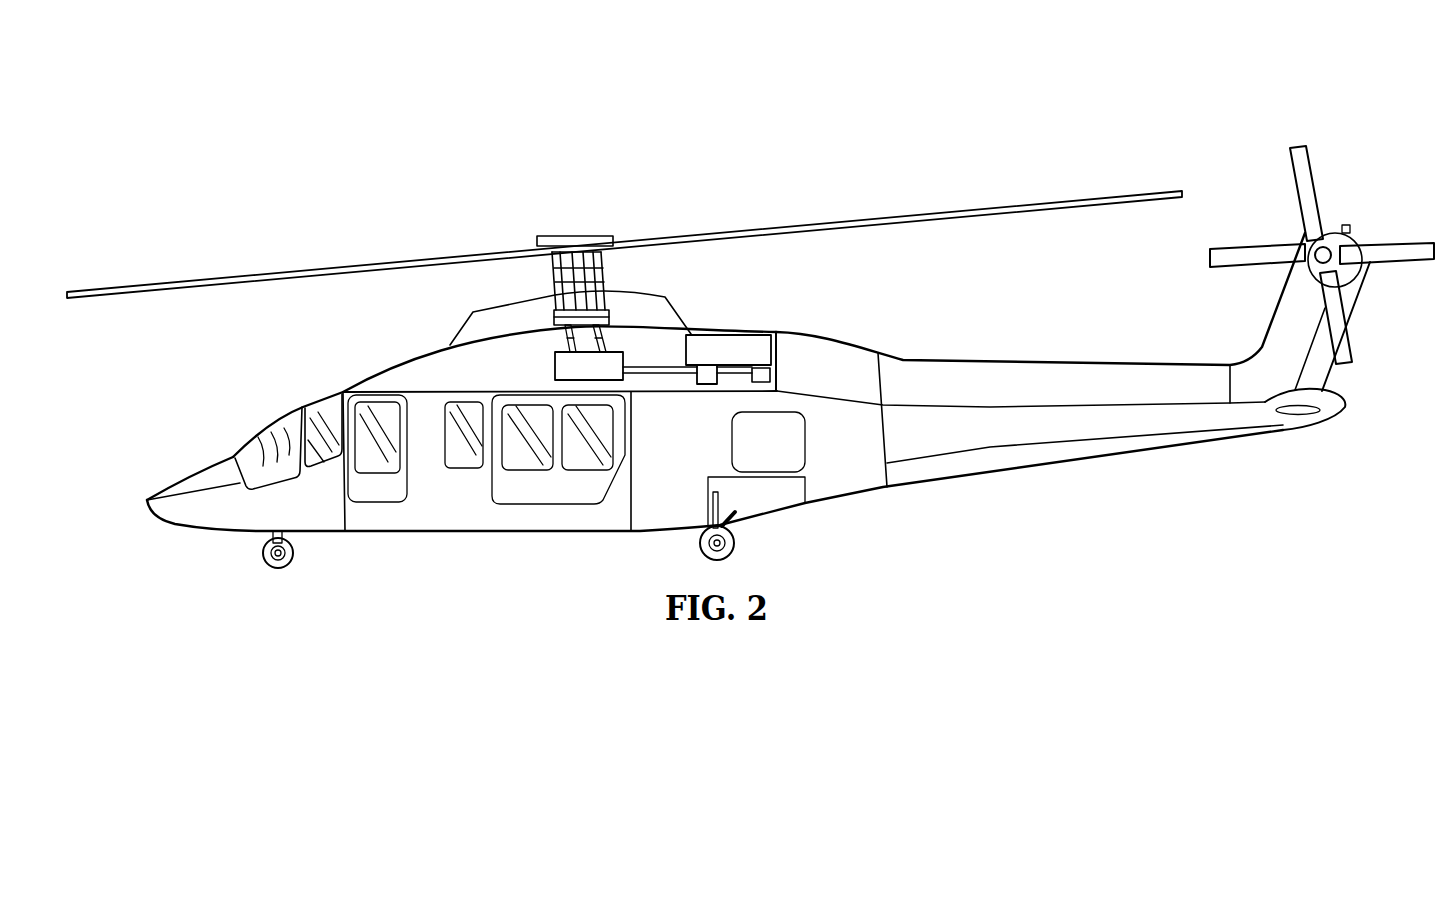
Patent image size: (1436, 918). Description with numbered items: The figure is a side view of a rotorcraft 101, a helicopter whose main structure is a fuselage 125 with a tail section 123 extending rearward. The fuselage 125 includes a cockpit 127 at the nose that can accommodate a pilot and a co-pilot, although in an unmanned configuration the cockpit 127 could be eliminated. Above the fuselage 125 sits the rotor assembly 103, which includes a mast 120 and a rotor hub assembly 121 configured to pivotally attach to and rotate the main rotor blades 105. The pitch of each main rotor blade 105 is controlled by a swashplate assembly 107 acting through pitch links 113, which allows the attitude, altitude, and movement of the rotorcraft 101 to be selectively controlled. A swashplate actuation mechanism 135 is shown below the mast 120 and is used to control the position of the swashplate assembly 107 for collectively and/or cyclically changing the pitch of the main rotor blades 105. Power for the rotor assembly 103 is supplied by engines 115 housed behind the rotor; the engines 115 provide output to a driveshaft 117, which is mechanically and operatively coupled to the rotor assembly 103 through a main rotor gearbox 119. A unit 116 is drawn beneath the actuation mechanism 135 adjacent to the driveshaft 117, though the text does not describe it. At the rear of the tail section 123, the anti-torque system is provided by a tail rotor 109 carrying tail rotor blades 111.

The rotorcraft 101 is at (423, 119).
The rotor assembly 103 is at (591, 231).
The main rotor blades 105 is at (1063, 200).
The swashplate assembly 107 is at (541, 318).
The tail rotor 109 is at (1344, 107).
The tail rotor blades 111 is at (1395, 243).
The pitch links 113 is at (607, 285).
The engines 115 is at (773, 350).
The control unit 116 is at (555, 360).
The driveshaft 117 is at (665, 378).
The main rotor gearbox 119 is at (637, 365).
The mast 120 is at (570, 270).
The rotor hub assembly 121 is at (579, 229).
The tail section 123 is at (1042, 472).
The fuselage 125 is at (512, 531).
The cockpit 127 is at (255, 430).
The swashplate actuation mechanism 135 is at (625, 333).